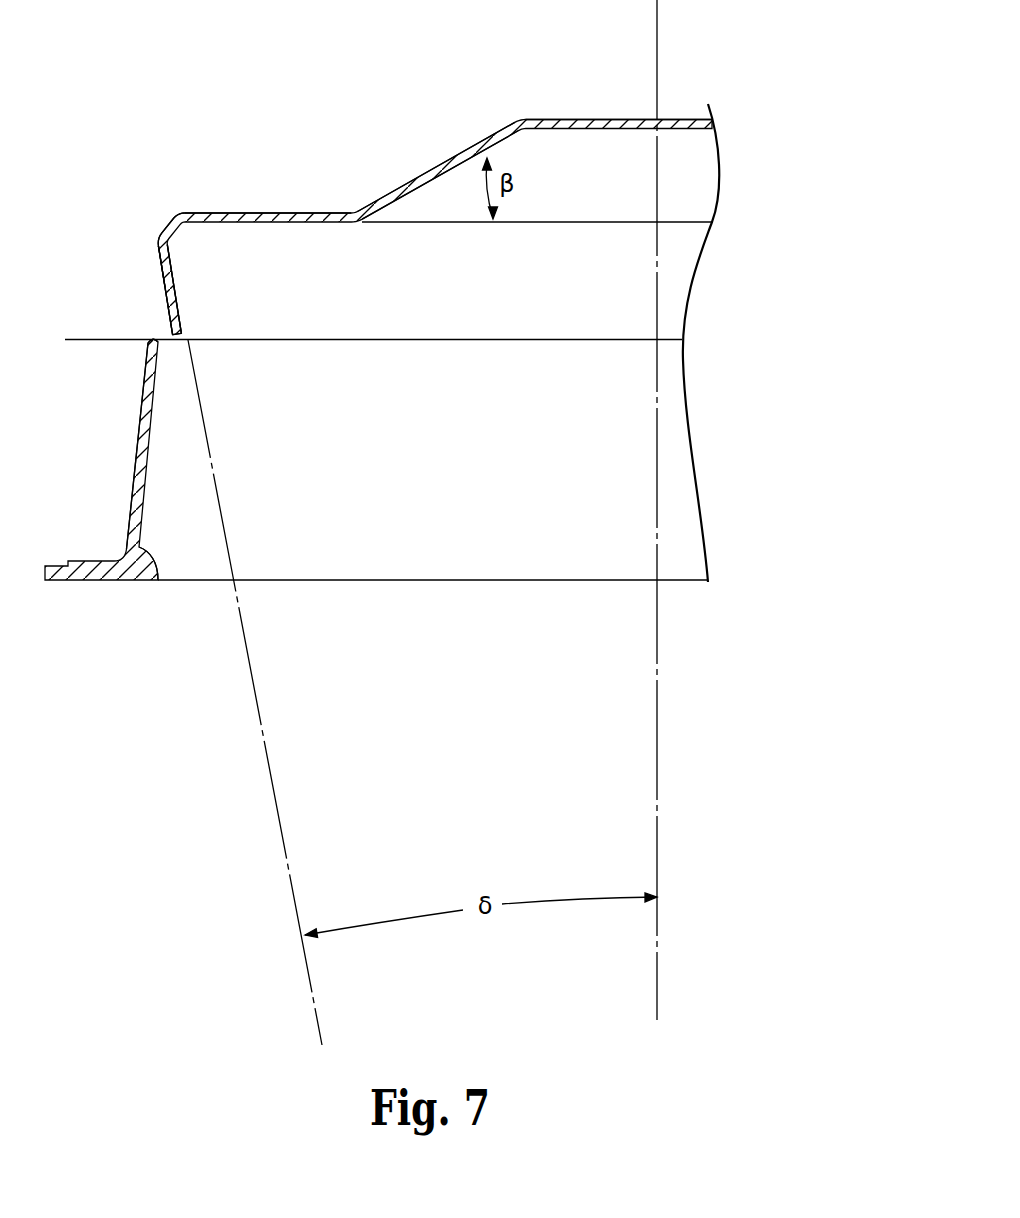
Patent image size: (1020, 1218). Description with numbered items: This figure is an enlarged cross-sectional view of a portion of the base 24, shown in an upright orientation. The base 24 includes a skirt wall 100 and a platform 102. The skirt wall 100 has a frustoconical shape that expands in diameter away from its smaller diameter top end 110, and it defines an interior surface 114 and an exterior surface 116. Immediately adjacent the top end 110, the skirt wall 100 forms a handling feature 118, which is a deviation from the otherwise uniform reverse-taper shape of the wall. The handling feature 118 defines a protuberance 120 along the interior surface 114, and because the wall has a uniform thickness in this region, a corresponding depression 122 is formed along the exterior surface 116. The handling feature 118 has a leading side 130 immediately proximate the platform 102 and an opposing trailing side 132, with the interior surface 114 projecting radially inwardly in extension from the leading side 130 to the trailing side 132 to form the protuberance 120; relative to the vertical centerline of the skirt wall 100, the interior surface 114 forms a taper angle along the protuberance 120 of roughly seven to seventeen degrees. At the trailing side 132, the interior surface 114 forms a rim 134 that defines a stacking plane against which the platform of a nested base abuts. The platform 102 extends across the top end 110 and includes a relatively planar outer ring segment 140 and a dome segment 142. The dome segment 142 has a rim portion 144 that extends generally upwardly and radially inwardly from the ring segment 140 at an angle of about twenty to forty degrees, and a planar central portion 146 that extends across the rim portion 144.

The base 24 is at (336, 31).
The skirt wall 100 is at (127, 427).
The platform 102 is at (282, 204).
The top end 110 is at (157, 243).
The interior surface 114 is at (140, 548).
The exterior surface 116 is at (130, 500).
The handling feature 118 is at (148, 250).
The protuberance 120 is at (180, 279).
The depression 122 is at (165, 292).
The leading side 130 is at (162, 229).
The trailing side 132 is at (172, 329).
The rim 134 is at (165, 345).
The outer ring segment 140 is at (230, 212).
The dome segment 142 is at (475, 132).
The rim portion 144 is at (447, 160).
The central portion 146 is at (597, 118).